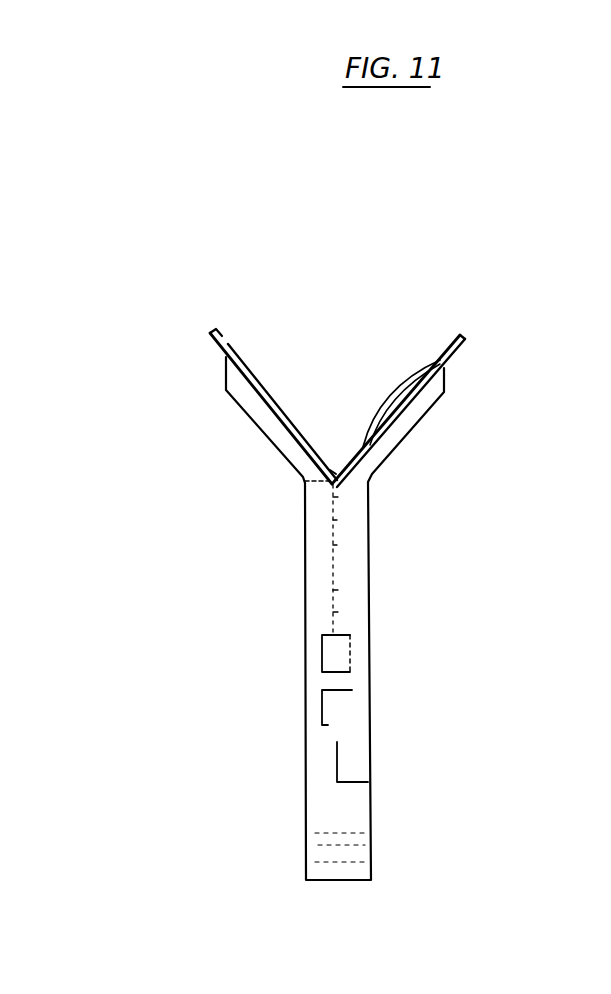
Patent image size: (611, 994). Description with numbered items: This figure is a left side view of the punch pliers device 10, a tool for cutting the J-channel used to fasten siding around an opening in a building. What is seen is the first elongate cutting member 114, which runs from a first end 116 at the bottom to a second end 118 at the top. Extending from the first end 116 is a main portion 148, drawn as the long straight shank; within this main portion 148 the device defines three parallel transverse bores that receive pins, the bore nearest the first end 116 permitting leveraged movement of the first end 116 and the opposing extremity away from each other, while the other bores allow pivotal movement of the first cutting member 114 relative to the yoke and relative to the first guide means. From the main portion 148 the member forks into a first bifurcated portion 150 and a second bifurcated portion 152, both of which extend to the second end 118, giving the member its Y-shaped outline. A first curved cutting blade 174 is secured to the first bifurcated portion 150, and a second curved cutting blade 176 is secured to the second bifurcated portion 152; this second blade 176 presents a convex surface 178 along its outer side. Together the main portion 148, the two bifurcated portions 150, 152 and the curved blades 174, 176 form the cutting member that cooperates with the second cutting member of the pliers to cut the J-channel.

The device 10 is at (389, 280).
The first elongate cutting member 114 is at (245, 697).
The first end 116 is at (352, 875).
The second end 118 is at (443, 371).
The main portion 148 is at (360, 673).
The first bifurcated portion 150 is at (231, 391).
The second bifurcated portion 152 is at (425, 408).
The first curved cutting blade 174 is at (229, 355).
The second curved cutting blade 176 is at (432, 363).
The convex surface 178 is at (393, 392).